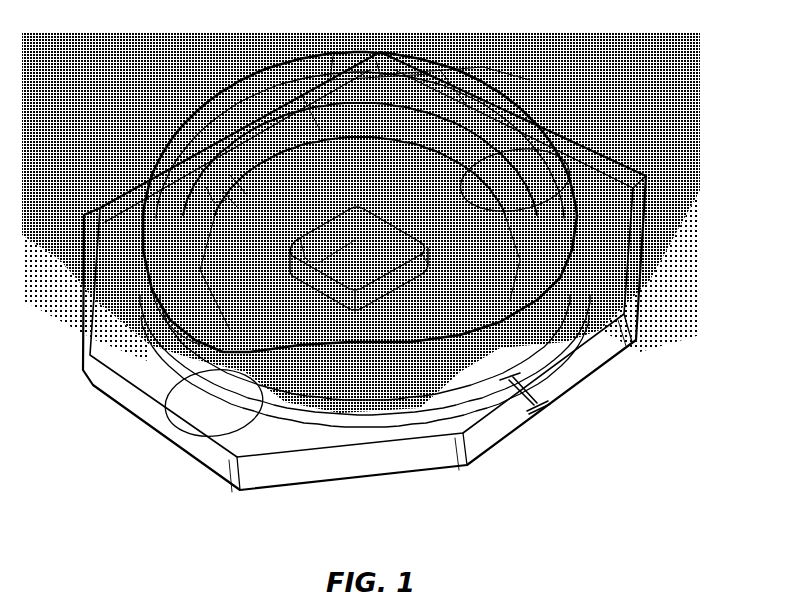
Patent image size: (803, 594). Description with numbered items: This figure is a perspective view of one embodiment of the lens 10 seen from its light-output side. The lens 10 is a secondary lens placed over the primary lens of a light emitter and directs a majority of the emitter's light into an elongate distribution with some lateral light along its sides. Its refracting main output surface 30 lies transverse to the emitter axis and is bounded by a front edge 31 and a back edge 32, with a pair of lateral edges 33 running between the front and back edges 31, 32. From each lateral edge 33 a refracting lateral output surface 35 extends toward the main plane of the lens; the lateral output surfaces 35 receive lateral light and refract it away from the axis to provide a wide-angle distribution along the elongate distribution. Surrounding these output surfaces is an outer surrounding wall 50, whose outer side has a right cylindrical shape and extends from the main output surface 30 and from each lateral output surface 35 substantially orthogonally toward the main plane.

The lens 10 is at (636, 103).
The main output surface 30 is at (240, 103).
The front edge 31 is at (180, 127).
The back edge 32 is at (503, 253).
The lateral edges 33 is at (200, 238).
The lateral output surfaces 35 is at (173, 285).
The outer surrounding wall 50 is at (180, 340).